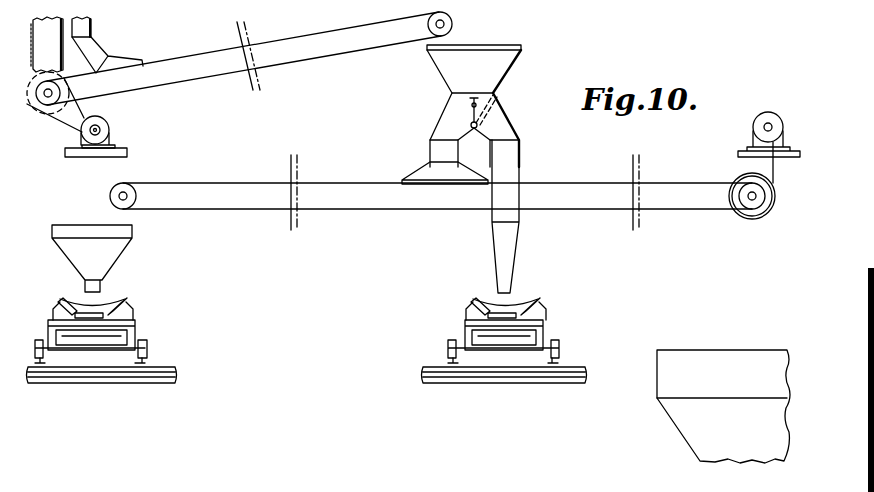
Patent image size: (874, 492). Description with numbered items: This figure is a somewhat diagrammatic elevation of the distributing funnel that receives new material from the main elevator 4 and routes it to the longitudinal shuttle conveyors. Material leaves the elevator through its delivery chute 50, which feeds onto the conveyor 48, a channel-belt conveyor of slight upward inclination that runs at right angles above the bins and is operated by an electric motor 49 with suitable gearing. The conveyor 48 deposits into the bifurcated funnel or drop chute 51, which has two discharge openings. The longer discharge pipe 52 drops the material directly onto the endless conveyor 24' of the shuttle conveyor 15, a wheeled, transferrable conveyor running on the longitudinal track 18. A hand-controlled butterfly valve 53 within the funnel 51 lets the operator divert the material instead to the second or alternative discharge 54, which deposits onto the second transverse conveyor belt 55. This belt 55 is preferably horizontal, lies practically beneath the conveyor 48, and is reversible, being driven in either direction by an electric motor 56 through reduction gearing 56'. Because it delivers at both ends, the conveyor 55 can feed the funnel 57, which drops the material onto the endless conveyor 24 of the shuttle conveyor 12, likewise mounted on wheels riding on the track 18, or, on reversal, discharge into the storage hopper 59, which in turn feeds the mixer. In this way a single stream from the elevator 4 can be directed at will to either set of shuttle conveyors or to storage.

The main elevator 4 is at (50, 50).
The delivery chute 50 is at (99, 46).
The conveyor 48 is at (207, 48).
The electric motor 49 is at (112, 122).
The bifurcated funnel or drop chute 51 is at (520, 72).
The butterfly valve 53 is at (480, 112).
The second or alternative discharge 54 is at (414, 168).
The discharge pipe 52 is at (520, 250).
The second transverse conveyor belt 55 is at (554, 182).
The electric motor 56 is at (769, 121).
The reduction gearing 56' is at (733, 185).
The storage hopper 59 is at (690, 350).
The funnel 57 is at (122, 254).
The endless conveyor 24 is at (129, 291).
The shuttle conveyor 12 is at (133, 316).
The longitudinal track 18 is at (145, 360).
The endless conveyor 24' is at (475, 297).
The shuttle conveyor 15 is at (530, 297).